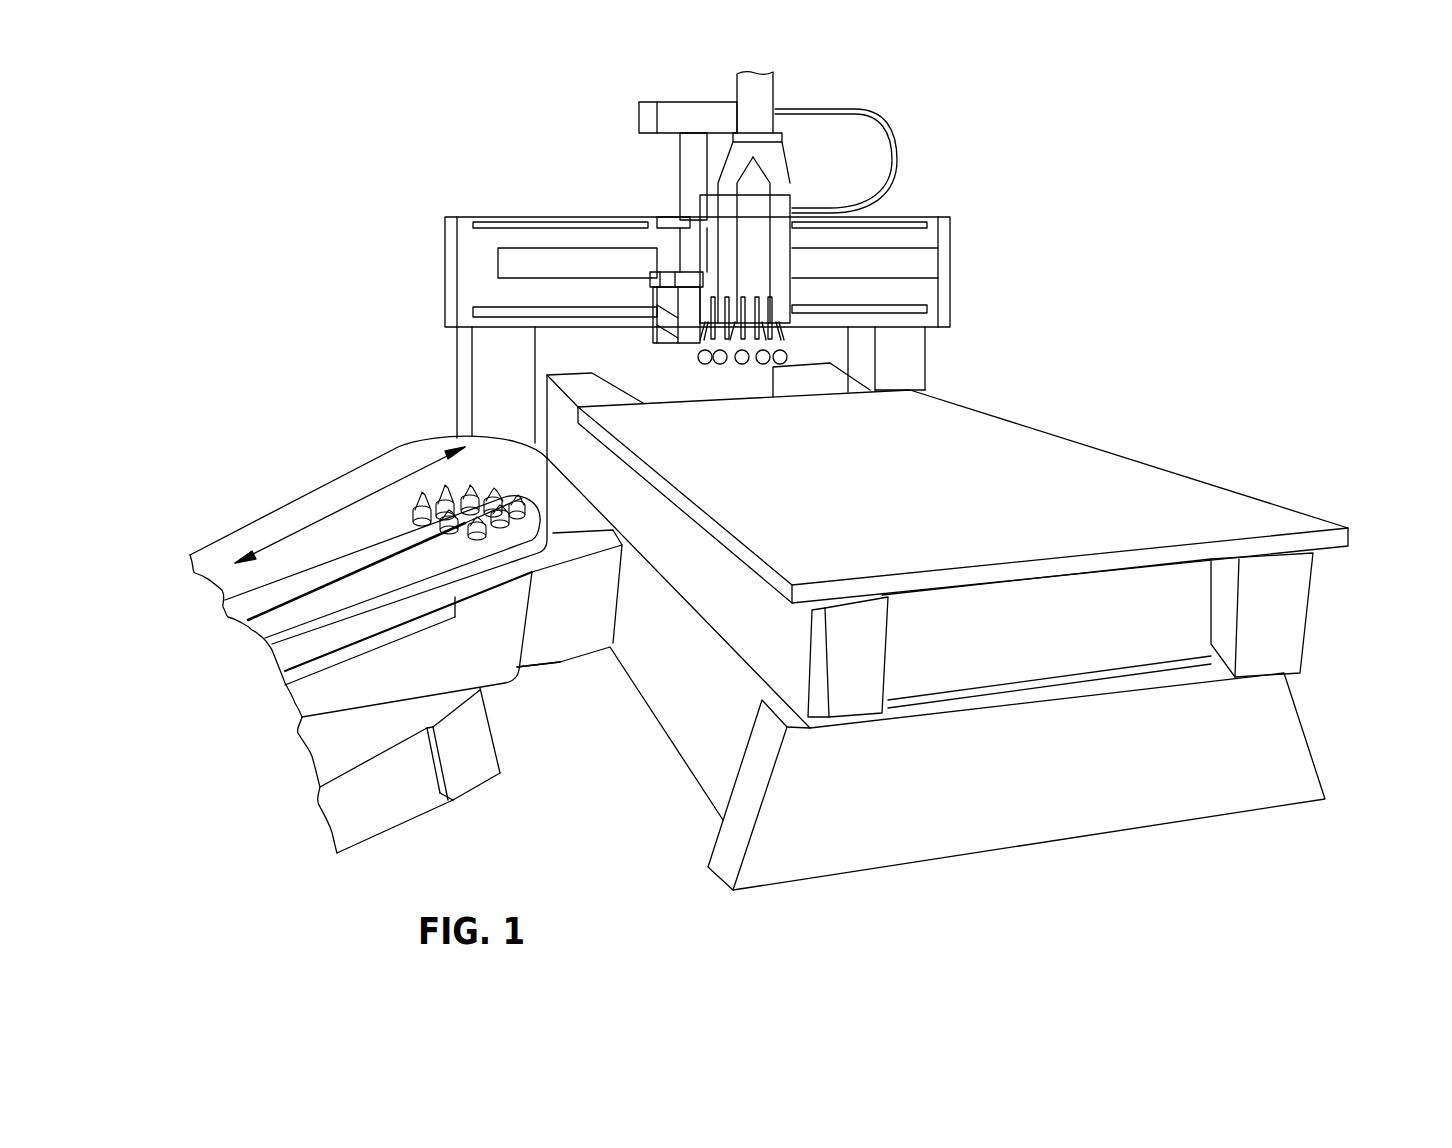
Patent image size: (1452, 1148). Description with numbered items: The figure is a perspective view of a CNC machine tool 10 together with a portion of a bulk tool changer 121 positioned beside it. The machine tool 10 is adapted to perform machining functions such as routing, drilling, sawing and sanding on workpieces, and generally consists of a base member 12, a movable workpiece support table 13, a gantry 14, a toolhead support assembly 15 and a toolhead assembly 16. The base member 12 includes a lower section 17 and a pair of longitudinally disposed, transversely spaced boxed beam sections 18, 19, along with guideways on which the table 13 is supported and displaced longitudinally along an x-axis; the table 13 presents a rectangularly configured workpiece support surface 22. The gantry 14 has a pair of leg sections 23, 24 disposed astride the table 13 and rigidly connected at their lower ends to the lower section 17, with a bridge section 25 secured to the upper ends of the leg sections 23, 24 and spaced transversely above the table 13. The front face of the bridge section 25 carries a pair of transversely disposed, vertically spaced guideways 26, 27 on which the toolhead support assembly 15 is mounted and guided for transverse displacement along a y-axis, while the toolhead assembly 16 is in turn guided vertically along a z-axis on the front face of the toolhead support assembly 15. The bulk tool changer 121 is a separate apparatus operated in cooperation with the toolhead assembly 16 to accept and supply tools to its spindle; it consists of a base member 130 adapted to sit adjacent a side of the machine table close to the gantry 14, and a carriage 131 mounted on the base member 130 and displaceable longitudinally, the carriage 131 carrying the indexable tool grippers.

The CNC machine tool 10 is at (997, 158).
The base member 12 is at (1308, 725).
The movable workpiece support table 13 is at (1150, 440).
The gantry 14 is at (445, 233).
The toolhead support assembly 15 is at (680, 158).
The toolhead assembly 16 is at (793, 262).
The lower section 17 is at (714, 818).
The boxed beam section 18 is at (890, 679).
The boxed beam section 19 is at (1209, 622).
The workpiece support surface 22 is at (1030, 425).
The leg section 23 is at (455, 395).
The leg section 24 is at (925, 362).
The bridge section 25 is at (950, 272).
The guideway 26 is at (527, 217).
The guideway 27 is at (445, 305).
The bulk tool changer 121 is at (341, 431).
The base member 130 is at (505, 686).
The carriage 131 is at (268, 510).